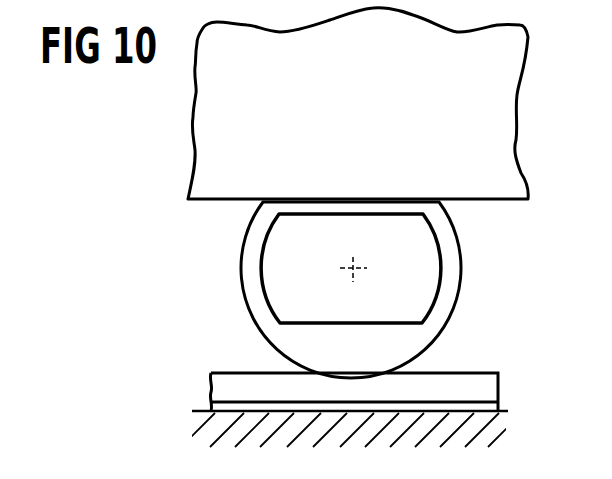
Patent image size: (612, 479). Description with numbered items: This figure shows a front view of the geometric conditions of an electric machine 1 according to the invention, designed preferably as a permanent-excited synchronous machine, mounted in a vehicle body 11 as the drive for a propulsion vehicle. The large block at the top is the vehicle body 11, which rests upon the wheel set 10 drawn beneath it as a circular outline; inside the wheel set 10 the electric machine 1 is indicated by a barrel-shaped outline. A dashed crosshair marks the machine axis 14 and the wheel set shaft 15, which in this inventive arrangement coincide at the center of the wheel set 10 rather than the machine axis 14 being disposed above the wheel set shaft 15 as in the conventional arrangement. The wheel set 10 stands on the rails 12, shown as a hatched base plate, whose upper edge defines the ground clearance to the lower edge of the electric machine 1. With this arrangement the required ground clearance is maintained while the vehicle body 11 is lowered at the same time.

The electric machine 1 is at (287, 297).
The wheel set 10 is at (459, 287).
The vehicle body 11 is at (368, 199).
The rails 12 is at (487, 388).
The machine axis 14 is at (438, 250).
The wheel set shaft 15 is at (355, 265).